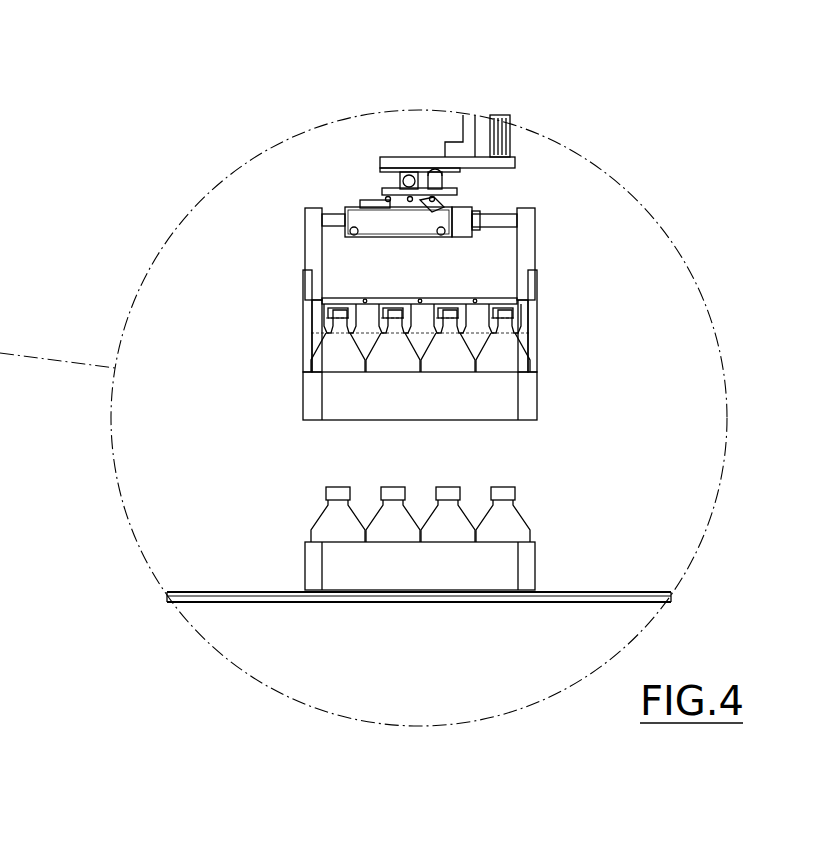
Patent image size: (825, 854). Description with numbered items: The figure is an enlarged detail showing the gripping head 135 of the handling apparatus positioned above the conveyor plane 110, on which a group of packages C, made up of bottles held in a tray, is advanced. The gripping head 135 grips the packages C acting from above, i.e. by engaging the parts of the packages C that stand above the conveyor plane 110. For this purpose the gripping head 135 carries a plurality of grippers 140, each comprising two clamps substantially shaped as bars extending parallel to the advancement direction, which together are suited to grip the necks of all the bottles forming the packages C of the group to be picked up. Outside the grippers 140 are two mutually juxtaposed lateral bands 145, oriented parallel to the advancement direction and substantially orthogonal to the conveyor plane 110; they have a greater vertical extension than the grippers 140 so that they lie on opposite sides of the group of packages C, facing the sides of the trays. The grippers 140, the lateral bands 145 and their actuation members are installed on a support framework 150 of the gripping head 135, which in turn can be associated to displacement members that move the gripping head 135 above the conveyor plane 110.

The conveyor plane 110 is at (257, 598).
The gripping head 135 is at (596, 273).
The grippers 140 is at (305, 303).
The lateral bands 145 is at (303, 353).
The support framework 150 is at (333, 212).
The packages C is at (457, 395).